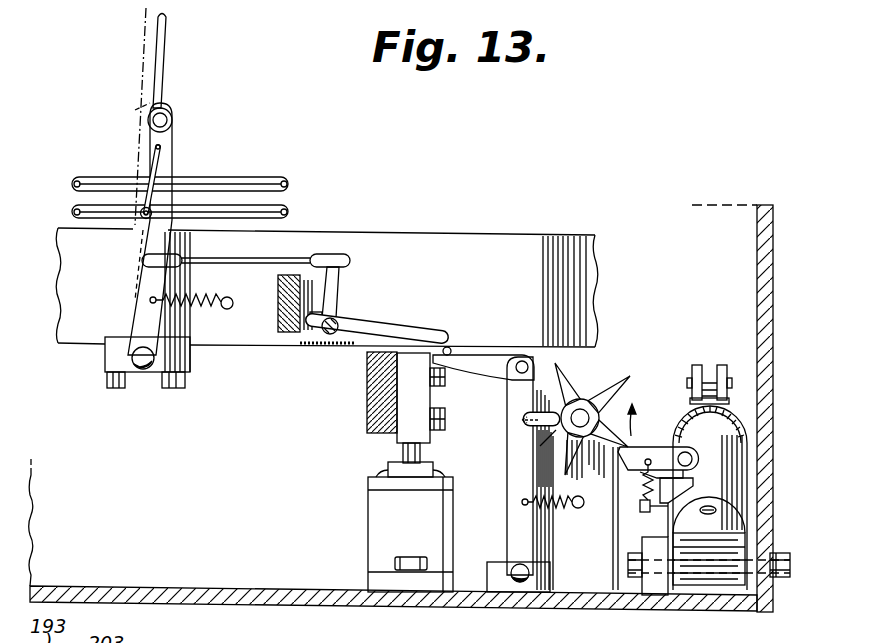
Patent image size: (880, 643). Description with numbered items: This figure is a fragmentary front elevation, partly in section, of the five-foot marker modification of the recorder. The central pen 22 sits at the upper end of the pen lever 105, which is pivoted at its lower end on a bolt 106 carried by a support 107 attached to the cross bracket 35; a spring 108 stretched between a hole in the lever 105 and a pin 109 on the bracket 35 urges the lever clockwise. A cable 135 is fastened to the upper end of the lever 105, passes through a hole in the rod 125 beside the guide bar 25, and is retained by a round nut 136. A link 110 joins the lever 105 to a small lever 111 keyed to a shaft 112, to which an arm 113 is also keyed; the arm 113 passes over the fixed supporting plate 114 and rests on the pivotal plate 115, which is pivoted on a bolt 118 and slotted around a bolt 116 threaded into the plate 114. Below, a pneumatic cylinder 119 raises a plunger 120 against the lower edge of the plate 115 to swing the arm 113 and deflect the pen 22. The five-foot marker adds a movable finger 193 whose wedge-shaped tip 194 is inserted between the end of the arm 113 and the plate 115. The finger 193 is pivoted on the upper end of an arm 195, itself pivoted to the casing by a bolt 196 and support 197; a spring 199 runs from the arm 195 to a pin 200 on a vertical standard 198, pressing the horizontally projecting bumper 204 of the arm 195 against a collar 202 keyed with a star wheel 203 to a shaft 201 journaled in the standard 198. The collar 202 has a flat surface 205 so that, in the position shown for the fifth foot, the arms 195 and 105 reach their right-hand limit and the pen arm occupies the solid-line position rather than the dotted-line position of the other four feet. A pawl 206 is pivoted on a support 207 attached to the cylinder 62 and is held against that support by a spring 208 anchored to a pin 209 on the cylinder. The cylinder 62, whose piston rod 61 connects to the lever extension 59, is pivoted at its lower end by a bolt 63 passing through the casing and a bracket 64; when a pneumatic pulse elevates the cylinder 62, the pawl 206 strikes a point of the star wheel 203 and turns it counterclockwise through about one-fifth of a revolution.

The central pen 22 is at (168, 48).
The guide bar 25 is at (257, 178).
The rod 125 is at (74, 205).
The cable 135 is at (163, 162).
The round nut 136 is at (93, 244).
The cross bracket 35 is at (490, 237).
The lever 105 is at (143, 277).
The bolt 106 is at (150, 373).
The support 107 is at (192, 360).
The spring 108 is at (200, 294).
The pin 109 is at (232, 312).
The link 110 is at (288, 256).
The small lever 111 is at (338, 290).
The shaft 112 is at (300, 340).
The arm 113 is at (380, 321).
The fixed supporting plate 114 is at (365, 388).
The pivotal plate 115 is at (405, 407).
The bolt 116 is at (446, 376).
The bolt 118 is at (446, 423).
The pneumatic cylinder 119 is at (380, 513).
The plunger 120 is at (403, 451).
The movable finger 193 is at (481, 360).
The wedge-shaped tip 194 is at (446, 348).
The arm 195 is at (516, 470).
The bolt 196 is at (523, 587).
The support 197 is at (490, 580).
The vertical standard 198 is at (583, 580).
The spring 199 is at (540, 519).
The pin 200 is at (579, 509).
The shaft 201 is at (589, 418).
The collar 202 is at (580, 395).
The star wheel 203 is at (607, 413).
The bumper 204 is at (537, 410).
The flat surface 205 is at (550, 430).
The pawl 206 is at (652, 446).
The support 207 is at (700, 467).
The spring 208 is at (640, 478).
The pin 209 is at (663, 513).
The cylinder 62 is at (737, 470).
The piston rod 61 is at (697, 366).
The extension 59 is at (710, 368).
The bolt 63 is at (637, 578).
The bracket 64 is at (655, 590).